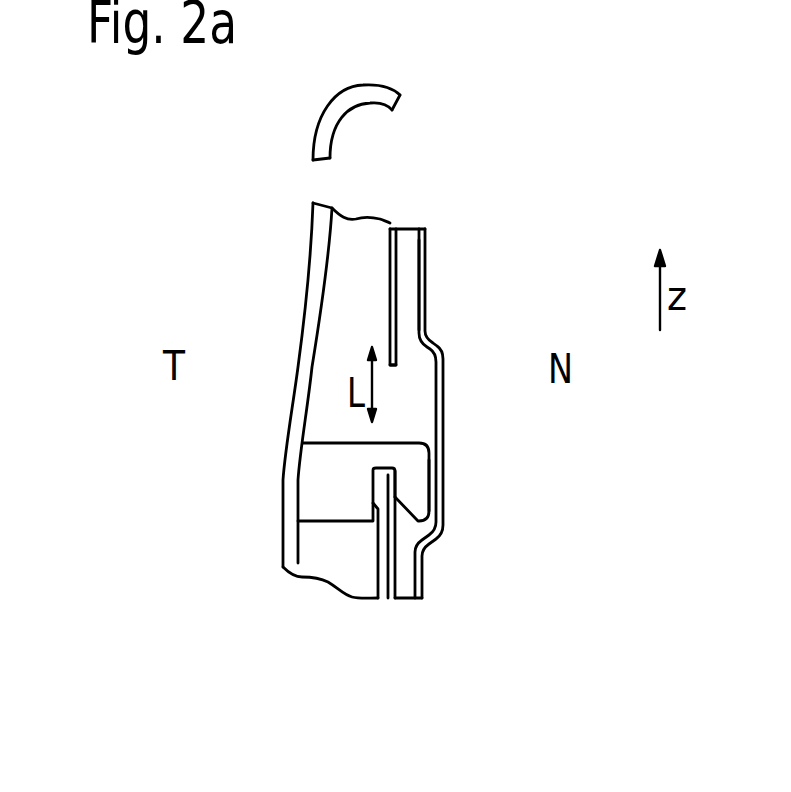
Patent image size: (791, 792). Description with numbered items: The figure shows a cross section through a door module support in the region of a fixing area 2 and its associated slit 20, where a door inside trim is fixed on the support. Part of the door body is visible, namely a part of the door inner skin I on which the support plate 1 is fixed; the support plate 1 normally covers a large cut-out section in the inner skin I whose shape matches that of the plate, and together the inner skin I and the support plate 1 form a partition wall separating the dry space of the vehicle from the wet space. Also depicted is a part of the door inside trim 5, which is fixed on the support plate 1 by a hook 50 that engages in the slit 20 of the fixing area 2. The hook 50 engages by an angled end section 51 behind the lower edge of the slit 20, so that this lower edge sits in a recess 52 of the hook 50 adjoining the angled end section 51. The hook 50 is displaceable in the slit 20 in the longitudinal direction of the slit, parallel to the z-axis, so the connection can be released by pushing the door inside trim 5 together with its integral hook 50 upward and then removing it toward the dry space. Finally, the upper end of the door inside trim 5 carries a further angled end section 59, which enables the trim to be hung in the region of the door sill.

The support plate 1 is at (455, 364).
The fixing area 2 is at (397, 318).
The slit 20 is at (392, 367).
The door inside trim 5 is at (307, 333).
The hook 50 is at (347, 442).
The angled end section 51 is at (430, 487).
The recess 52 is at (385, 512).
The angled end section 59 is at (322, 116).
The door inner skin I is at (425, 268).